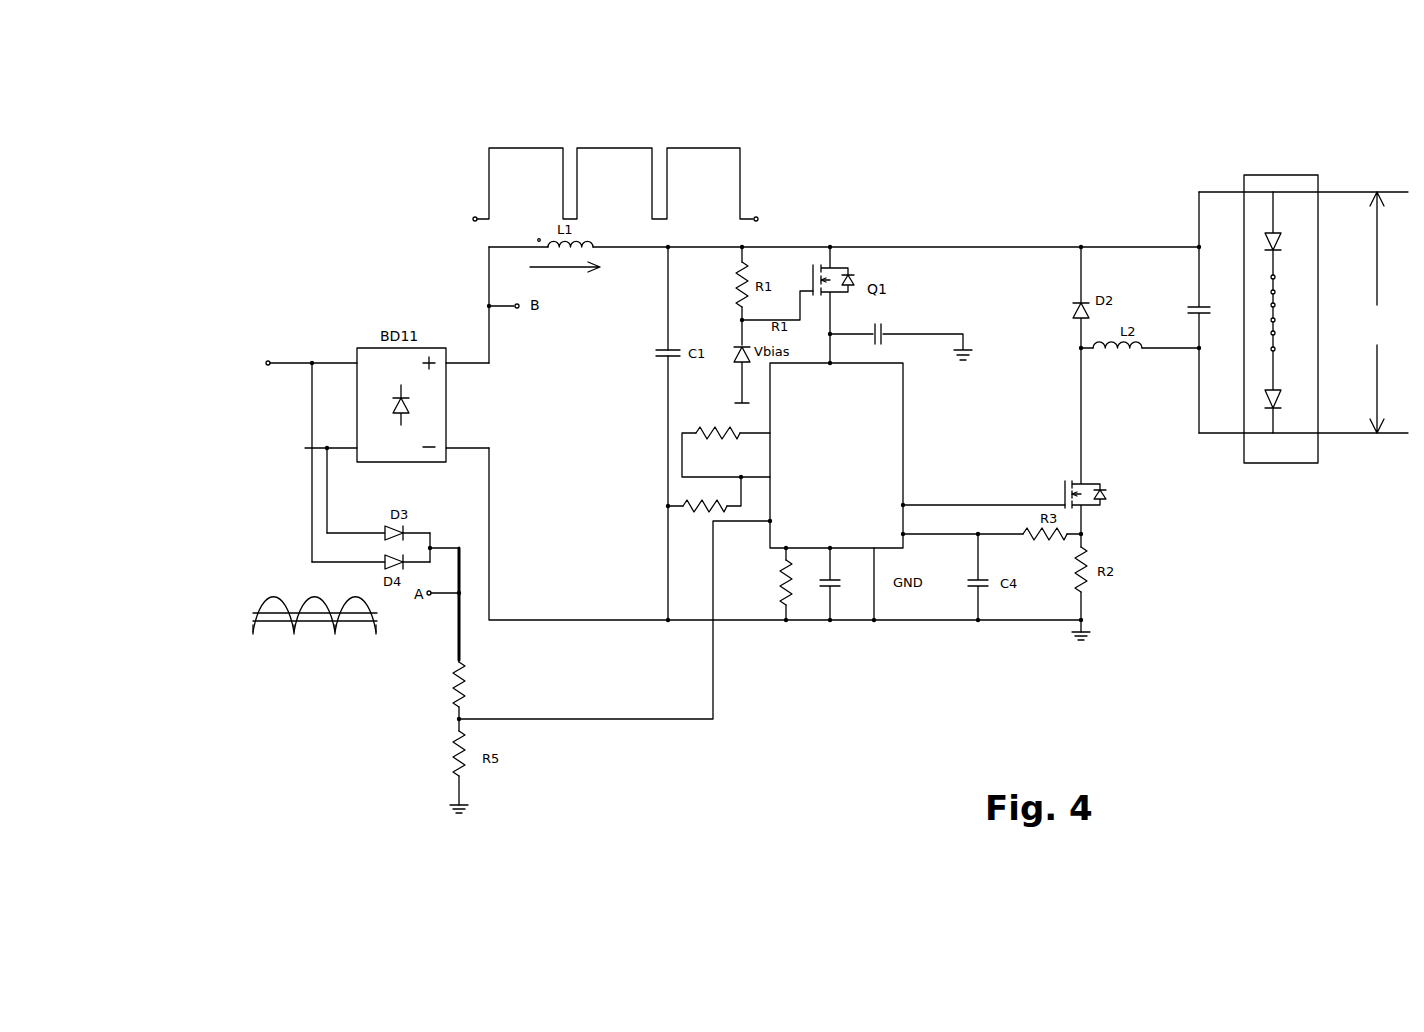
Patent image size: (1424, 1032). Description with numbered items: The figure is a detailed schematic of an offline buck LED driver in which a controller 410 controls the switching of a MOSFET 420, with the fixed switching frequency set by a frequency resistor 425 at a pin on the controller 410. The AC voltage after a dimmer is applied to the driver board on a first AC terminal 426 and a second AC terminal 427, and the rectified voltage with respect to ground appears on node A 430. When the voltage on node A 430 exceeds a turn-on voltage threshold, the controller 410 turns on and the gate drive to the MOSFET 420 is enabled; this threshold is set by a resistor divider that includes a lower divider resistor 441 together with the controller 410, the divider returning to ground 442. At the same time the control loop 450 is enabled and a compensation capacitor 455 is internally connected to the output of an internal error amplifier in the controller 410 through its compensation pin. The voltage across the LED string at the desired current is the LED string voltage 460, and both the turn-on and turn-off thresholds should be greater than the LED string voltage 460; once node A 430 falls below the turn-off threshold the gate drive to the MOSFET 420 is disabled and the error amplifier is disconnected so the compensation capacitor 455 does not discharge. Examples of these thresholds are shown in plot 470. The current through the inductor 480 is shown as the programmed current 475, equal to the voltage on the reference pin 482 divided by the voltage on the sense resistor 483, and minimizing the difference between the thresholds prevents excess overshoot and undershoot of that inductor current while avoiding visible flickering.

The controller 410 is at (900, 449).
The MOSFET Q2 420 is at (1088, 464).
The resistor R6 425 is at (770, 627).
The terminal AC1 426 is at (310, 359).
The terminal AC2 427 is at (338, 468).
The node A 430 is at (410, 632).
The resistor R5 441 is at (513, 677).
The ground 442 is at (470, 806).
The control loop 450 is at (612, 725).
The capacitor C5 455 is at (849, 627).
The VLED 460 is at (1361, 296).
The plot 470 is at (258, 660).
The Iprog 475 is at (496, 143).
The inductor 480 is at (569, 280).
The reference pin (REFI) 482 is at (770, 431).
The resistor R2 483 is at (1099, 597).